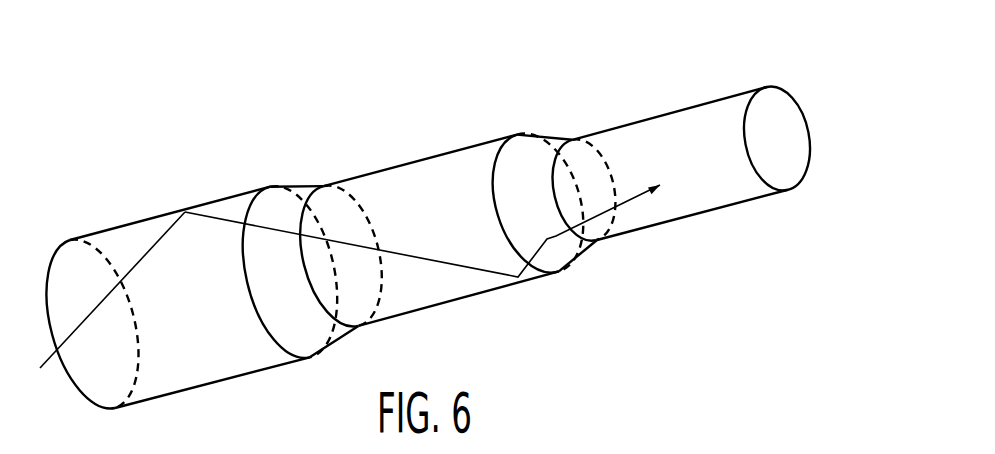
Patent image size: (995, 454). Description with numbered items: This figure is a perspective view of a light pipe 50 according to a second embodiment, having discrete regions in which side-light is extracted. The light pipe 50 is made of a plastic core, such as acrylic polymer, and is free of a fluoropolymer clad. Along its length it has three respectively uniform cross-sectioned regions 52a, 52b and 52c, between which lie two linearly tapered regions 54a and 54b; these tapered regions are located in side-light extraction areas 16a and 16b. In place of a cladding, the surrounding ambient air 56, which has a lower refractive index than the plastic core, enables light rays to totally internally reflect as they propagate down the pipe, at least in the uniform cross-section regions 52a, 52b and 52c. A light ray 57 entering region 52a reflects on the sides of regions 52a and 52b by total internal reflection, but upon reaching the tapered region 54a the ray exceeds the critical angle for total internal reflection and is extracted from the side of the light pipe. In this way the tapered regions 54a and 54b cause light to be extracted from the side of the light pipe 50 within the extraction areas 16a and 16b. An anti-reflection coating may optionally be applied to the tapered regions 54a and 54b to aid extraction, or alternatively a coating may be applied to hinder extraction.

The light pipe 50 is at (370, 63).
The uniform cross-sectioned region 52a is at (143, 223).
The uniform cross-sectioned region 52b is at (407, 179).
The uniform cross-sectioned region 52c is at (657, 111).
The linearly tapered region 54a is at (293, 201).
The linearly tapered region 54b is at (543, 141).
The side-light extraction area 16a is at (340, 153).
The side-light extraction area 16b is at (588, 106).
The ambient air 56 is at (509, 330).
The light ray 57 is at (48, 372).